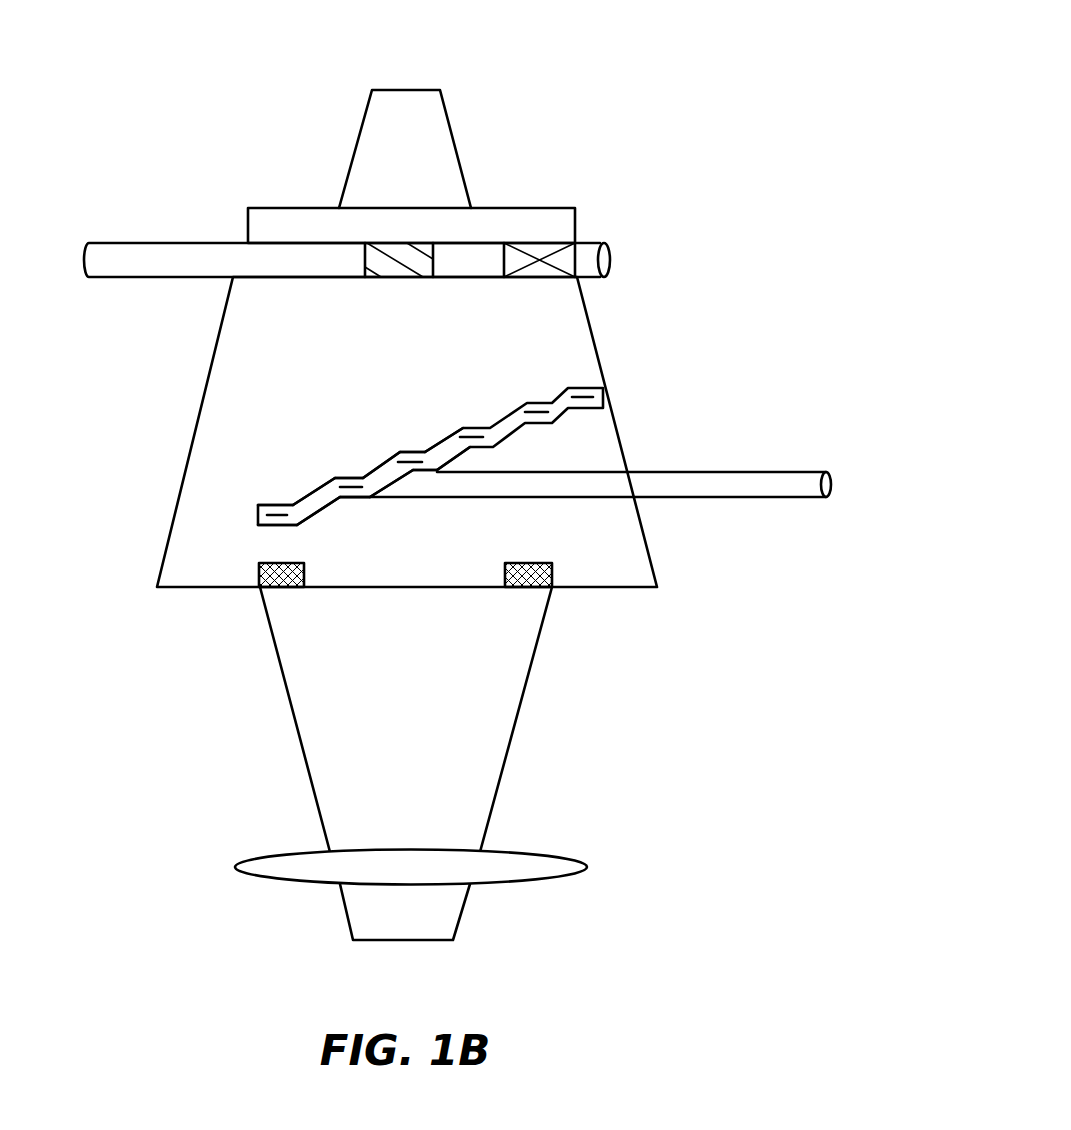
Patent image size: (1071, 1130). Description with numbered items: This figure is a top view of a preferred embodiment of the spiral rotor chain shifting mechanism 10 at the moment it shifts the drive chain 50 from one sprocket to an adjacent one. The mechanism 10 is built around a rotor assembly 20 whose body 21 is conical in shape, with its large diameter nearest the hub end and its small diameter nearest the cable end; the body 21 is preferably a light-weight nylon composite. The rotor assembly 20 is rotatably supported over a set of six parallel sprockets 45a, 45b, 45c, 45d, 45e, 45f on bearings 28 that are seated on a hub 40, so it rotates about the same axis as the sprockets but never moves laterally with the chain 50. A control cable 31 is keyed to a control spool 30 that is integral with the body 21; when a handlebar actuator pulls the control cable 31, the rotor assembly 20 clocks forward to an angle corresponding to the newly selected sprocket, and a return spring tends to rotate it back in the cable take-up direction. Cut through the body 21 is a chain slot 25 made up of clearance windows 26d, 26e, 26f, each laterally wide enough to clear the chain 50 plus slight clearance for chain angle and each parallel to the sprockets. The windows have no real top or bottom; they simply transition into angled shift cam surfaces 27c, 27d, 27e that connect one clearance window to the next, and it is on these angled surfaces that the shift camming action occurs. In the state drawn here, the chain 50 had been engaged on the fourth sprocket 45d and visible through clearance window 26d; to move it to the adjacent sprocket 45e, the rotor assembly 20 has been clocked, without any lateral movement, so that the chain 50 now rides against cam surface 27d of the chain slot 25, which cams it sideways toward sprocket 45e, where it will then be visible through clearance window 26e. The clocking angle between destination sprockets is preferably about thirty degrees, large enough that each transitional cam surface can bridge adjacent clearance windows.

The spiral rotor chain shifting mechanism 10 is at (653, 90).
The rotor assembly 20 is at (467, 459).
The body 21 is at (206, 383).
The chain slot 25 is at (248, 506).
The clearance window 26d is at (417, 452).
The clearance window 26e is at (348, 477).
The clearance window 26f is at (258, 504).
The cam surface 27c is at (447, 437).
The cam surface 27d is at (405, 490).
The cam surface 27e is at (312, 491).
The bearing 28 is at (545, 243).
The control spool 30 is at (377, 243).
The control cable 31 is at (160, 243).
The hub 40 is at (564, 757).
The sprocket 45a is at (587, 390).
The sprocket 45b is at (535, 403).
The sprocket 45c is at (470, 432).
The sprocket 45d is at (437, 471).
The sprocket 45e is at (342, 498).
The sprocket 45f is at (270, 523).
The chain 50 is at (765, 498).